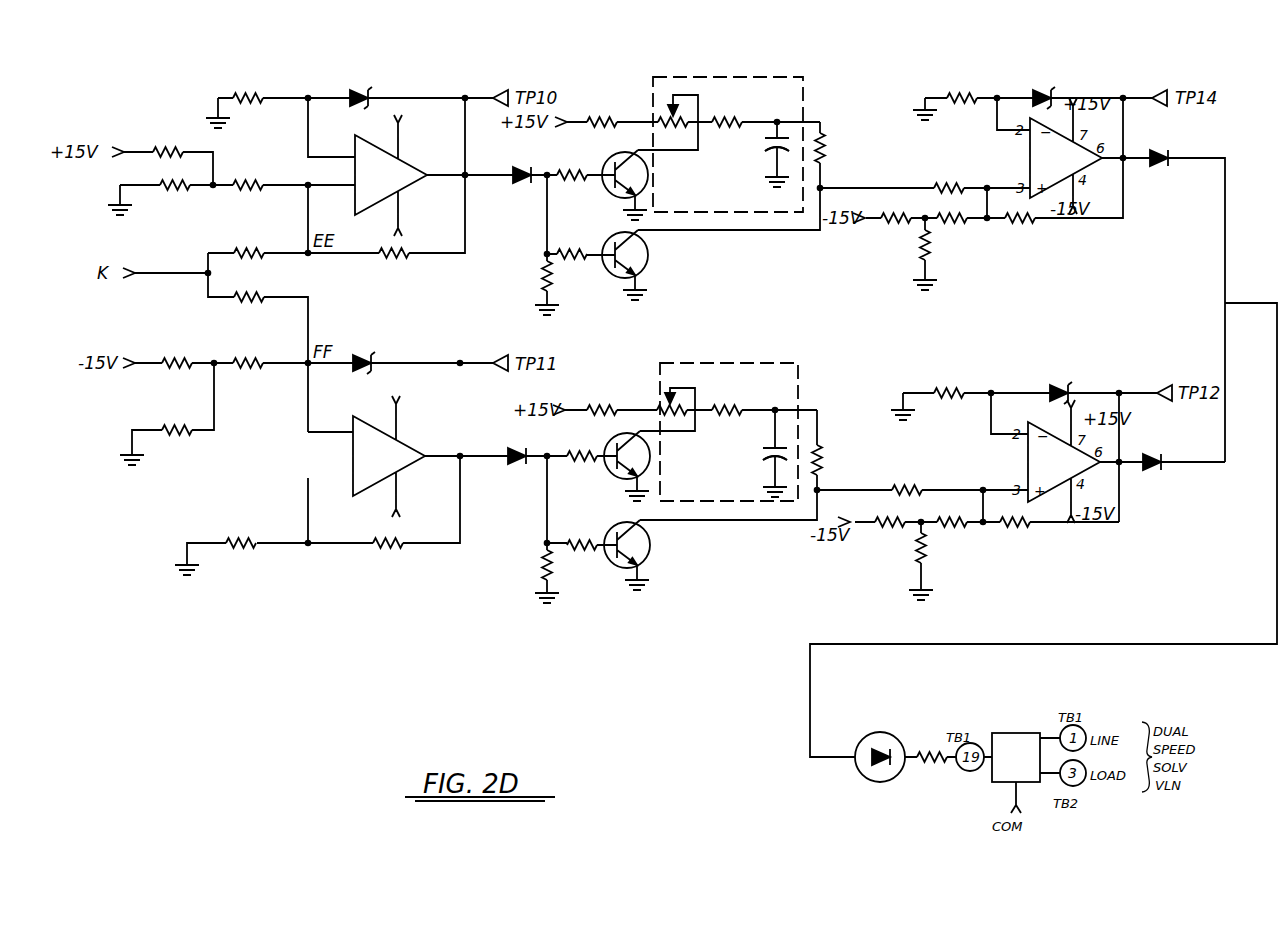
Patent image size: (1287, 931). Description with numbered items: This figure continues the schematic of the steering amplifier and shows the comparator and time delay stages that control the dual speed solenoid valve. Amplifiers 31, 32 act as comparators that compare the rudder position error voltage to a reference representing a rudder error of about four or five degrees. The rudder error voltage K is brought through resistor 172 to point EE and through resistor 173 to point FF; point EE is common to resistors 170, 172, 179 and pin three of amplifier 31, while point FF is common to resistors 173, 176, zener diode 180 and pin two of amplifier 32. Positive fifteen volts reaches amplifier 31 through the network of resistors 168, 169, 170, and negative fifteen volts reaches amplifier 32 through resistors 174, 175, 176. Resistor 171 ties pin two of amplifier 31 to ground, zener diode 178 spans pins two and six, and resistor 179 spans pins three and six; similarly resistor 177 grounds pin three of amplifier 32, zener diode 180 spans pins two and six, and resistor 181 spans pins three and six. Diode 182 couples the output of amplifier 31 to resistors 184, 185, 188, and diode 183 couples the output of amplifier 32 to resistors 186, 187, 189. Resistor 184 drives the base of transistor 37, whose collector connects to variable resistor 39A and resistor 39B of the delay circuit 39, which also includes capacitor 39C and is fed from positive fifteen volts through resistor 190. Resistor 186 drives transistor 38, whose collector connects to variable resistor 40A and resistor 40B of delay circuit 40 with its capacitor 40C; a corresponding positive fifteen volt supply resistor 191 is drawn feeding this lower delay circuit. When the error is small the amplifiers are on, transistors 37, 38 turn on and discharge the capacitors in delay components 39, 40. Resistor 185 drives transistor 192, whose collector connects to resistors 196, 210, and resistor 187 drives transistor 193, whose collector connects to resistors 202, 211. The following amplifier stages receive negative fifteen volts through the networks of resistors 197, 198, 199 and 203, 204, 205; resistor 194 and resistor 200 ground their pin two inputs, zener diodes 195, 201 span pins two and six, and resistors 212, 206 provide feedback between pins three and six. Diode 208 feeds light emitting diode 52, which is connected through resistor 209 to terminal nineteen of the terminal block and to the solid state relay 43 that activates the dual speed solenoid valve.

The amplifier 31 is at (372, 208).
The amplifier 32 is at (368, 490).
The transistor 37 is at (648, 184).
The transistor 38 is at (618, 478).
The time delay component 39 is at (804, 92).
The variable resistor 39A is at (680, 132).
The resistor 39B is at (722, 118).
The capacitor 39C is at (765, 143).
The time delay component 40 is at (762, 366).
The variable resistor 40A is at (676, 420).
The resistor 40B is at (732, 408).
The capacitor 40C is at (770, 456).
The solid state relay 43 is at (1010, 733).
The light emitting diode 52 is at (892, 738).
The resistor 168 is at (190, 148).
The resistor 169 is at (160, 190).
The resistor 170 is at (243, 182).
The resistor 171 is at (243, 96).
The resistor 172 is at (243, 250).
The resistor 173 is at (246, 294).
The resistor 174 is at (160, 360).
The resistor 175 is at (182, 432).
The resistor 176 is at (245, 370).
The resistor 177 is at (238, 548).
The zener diode 178 is at (366, 96).
The resistor 179 is at (385, 262).
The zener diode 180 is at (372, 362).
The resistor 181 is at (383, 550).
The diode 182 is at (516, 170).
The diode 183 is at (514, 450).
The resistor 184 is at (560, 180).
The resistor 185 is at (562, 262).
The resistor 186 is at (565, 448).
The resistor 187 is at (572, 552).
The resistor 188 is at (553, 290).
The resistor 189 is at (553, 588).
The resistor 190 is at (625, 99).
The resistor 191 is at (590, 402).
The transistor 192 is at (650, 250).
The transistor 193 is at (650, 543).
The resistor 194 is at (962, 94).
The zener diode 195 is at (1046, 92).
The resistor 196 is at (952, 184).
The resistor 197 is at (898, 226).
The resistor 198 is at (950, 226).
The resistor 199 is at (930, 256).
The resistor 200 is at (955, 392).
The zener diode 201 is at (1062, 390).
The resistor 202 is at (1162, 152).
The resistor 203 is at (881, 522).
The resistor 204 is at (936, 530).
The resistor 205 is at (930, 572).
The resistor 206 is at (1028, 530).
The diode 208 is at (1135, 470).
The resistor 209 is at (920, 770).
The resistor 210 is at (824, 146).
The resistor 211 is at (822, 460).
The resistor 212 is at (1028, 226).